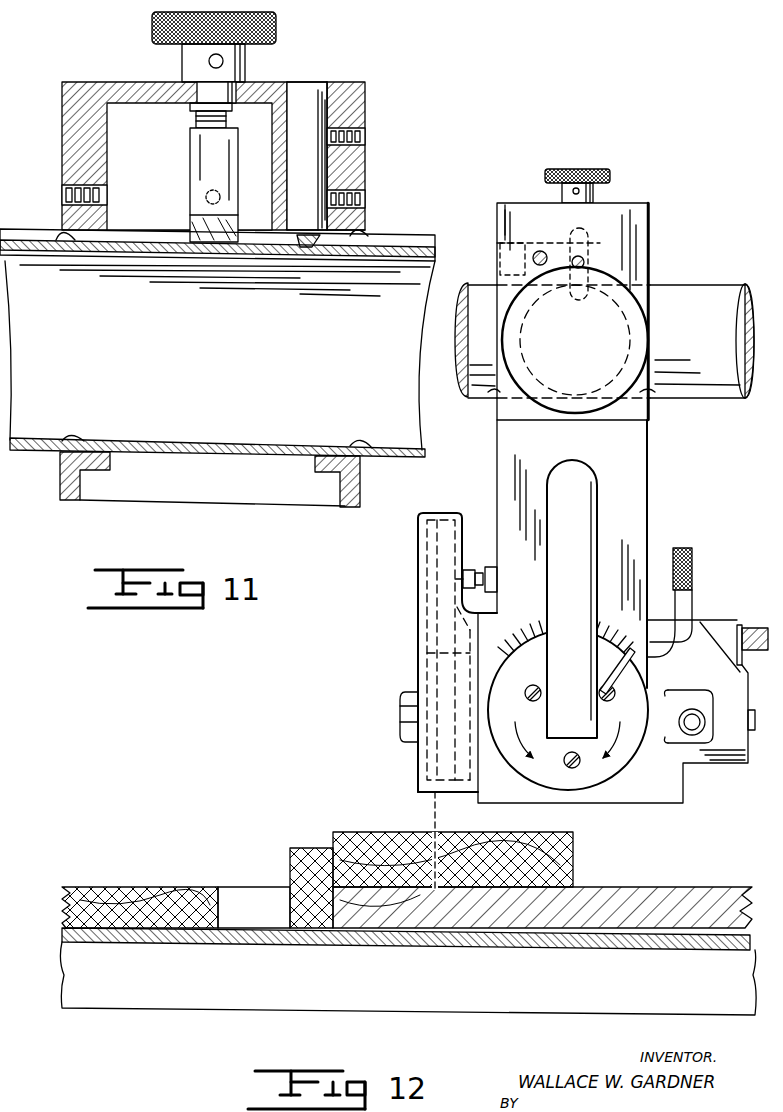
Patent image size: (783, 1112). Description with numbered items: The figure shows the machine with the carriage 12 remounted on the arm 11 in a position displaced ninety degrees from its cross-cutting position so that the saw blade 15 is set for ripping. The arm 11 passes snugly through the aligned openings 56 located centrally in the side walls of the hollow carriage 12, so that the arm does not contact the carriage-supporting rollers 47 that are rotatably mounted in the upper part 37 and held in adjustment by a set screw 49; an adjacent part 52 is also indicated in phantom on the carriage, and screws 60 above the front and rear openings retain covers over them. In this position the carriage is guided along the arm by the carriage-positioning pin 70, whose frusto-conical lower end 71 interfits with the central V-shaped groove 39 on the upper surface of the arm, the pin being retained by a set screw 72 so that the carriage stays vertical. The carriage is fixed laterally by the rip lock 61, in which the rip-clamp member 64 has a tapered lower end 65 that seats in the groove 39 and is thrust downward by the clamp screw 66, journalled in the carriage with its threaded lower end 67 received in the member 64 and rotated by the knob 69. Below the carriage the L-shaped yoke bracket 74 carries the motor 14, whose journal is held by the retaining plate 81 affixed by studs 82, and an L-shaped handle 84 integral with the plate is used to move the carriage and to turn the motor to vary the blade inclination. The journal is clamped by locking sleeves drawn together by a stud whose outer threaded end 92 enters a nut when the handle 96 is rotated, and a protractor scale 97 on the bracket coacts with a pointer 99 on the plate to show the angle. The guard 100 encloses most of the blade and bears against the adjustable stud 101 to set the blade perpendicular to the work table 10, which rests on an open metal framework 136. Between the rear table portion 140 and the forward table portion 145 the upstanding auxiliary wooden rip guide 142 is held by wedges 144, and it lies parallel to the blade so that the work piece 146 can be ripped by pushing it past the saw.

In FIG. 12, the work table 10 is at (695, 890).
In FIG. 11, the arm 11 is at (423, 412).
In FIG. 12, the arm 11 is at (750, 286).
In FIG. 11, the carriage 12 is at (368, 106).
In FIG. 12, the carriage 12 is at (658, 264).
In FIG. 12, the motor 14 is at (712, 765).
In FIG. 12, the saw blade 15 is at (440, 816).
In FIG. 11, the upper part of the carriage 37 is at (350, 186).
In FIG. 12, the upper part of the carriage 37 is at (650, 240).
In FIG. 11, the V-shaped groove 39 is at (417, 232).
In FIG. 12, the carriage-supporting rollers 47 is at (588, 236).
In FIG. 12, the set screw 49 is at (510, 215).
In FIG. 12, the recess 52 is at (497, 252).
In FIG. 11, the aligned openings 56 is at (65, 236).
In FIG. 12, the aligned openings 56 is at (492, 396).
In FIG. 12, the screws 60 is at (575, 270).
In FIG. 11, the rip lock 61 is at (176, 60).
In FIG. 11, the rip-clamp member 64 is at (198, 182).
In FIG. 11, the lower end of rip-clamp member 65 is at (190, 224).
In FIG. 11, the clamp screw 66 is at (238, 92).
In FIG. 11, the threaded lower end 67 is at (194, 118).
In FIG. 11, the knob 69 is at (276, 28).
In FIG. 12, the knob 69 is at (610, 176).
In FIG. 11, the carriage-positioning pin 70 is at (320, 172).
In FIG. 11, the frusto-conical lower end 71 is at (297, 259).
In FIG. 11, the set screw 72 is at (365, 138).
In FIG. 12, the yoke bracket 74 is at (640, 508).
In FIG. 12, the retaining plate 81 is at (632, 758).
In FIG. 12, the studs 82 is at (525, 698).
In FIG. 12, the L-shaped handle 84 is at (587, 535).
In FIG. 12, the outer threaded end of stud 92 is at (544, 250).
In FIG. 12, the handle 96 is at (685, 600).
In FIG. 12, the protractor scale 97 is at (520, 630).
In FIG. 12, the pointer 99 is at (650, 660).
In FIG. 12, the guard 100 is at (455, 513).
In FIG. 12, the adjustable stud 101 is at (472, 566).
In FIG. 12, the open metal framework 136 is at (225, 993).
In FIG. 12, the rear table portion 140 is at (145, 894).
In FIG. 12, the auxiliary wooden rip guide 142 is at (305, 848).
In FIG. 12, the wedges 144 is at (248, 896).
In FIG. 12, the table portion 145 is at (625, 905).
In FIG. 12, the work piece 146 is at (520, 842).